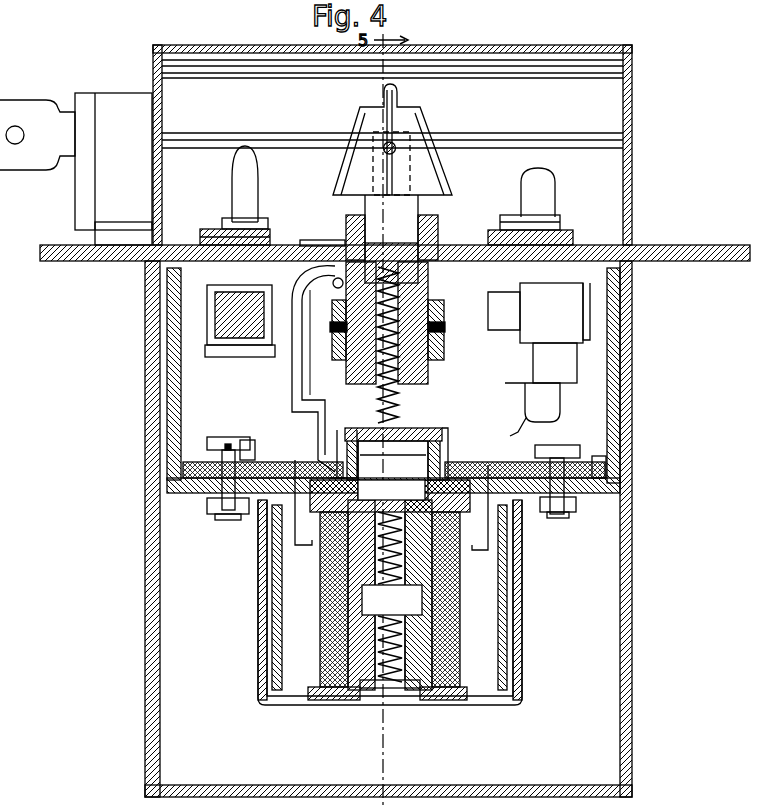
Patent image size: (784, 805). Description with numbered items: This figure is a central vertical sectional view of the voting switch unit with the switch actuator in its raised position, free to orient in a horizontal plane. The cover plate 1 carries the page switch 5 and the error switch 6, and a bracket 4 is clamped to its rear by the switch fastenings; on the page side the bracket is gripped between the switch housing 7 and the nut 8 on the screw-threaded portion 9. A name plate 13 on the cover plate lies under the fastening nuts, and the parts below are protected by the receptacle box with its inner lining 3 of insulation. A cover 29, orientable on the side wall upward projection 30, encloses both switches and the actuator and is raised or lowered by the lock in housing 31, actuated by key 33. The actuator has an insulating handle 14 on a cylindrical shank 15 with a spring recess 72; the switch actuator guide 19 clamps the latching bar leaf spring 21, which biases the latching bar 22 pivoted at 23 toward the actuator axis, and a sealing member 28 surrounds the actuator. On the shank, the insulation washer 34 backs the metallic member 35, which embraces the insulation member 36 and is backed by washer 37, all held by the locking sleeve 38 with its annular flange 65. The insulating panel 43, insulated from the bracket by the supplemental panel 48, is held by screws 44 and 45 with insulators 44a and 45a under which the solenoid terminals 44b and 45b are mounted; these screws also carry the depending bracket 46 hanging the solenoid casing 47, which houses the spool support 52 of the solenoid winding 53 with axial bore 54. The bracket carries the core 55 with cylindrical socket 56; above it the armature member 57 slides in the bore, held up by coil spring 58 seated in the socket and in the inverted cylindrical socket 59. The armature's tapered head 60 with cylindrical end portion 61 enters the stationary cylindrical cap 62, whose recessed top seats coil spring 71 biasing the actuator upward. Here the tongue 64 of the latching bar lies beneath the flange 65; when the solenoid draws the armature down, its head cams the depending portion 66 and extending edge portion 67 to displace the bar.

The cover plate 1 is at (58, 262).
The inner lining 3 is at (160, 638).
The bracket 4 is at (168, 362).
The page switch 5 is at (232, 170).
The error switch 6 is at (556, 196).
The switch housing 7 is at (190, 316).
The nut 8 is at (200, 236).
The screw-threaded portion 9 is at (262, 208).
The name plate 13 is at (600, 246).
The handle 14 is at (426, 150).
The cylindrical shank 15 is at (425, 200).
The switch actuator guide 19 is at (440, 250).
The latching bar leaf spring 21 is at (290, 398).
The latching bar 22 is at (300, 352).
The pivot 23 is at (322, 240).
The sealing member 28 is at (440, 224).
The cover 29 is at (630, 115).
The side wall upward projection 30 is at (535, 140).
The lock housing 31 is at (112, 100).
The key 33 is at (36, 100).
The washer member 34 is at (535, 313).
The metallic member 35 is at (447, 327).
The insulation member 36 is at (565, 311).
The washer 37 is at (541, 389).
The locking sleeve 38 is at (432, 356).
The panel 43 is at (182, 470).
The screw 44 is at (228, 467).
The insulator 44a is at (200, 456).
The solenoid terminal 44b is at (295, 446).
The screw 45 is at (560, 448).
The insulator 45a is at (606, 460).
The solenoid terminal 45b is at (521, 510).
The depending bracket 46 is at (520, 690).
The solenoid casing 47 is at (462, 612).
The supplemental panel 48 is at (165, 488).
The spool support 52 is at (508, 650).
The solenoid winding 53 is at (320, 648).
The axial bore 54 is at (462, 595).
The core 55 is at (405, 700).
The cylindrical socket 56 is at (460, 630).
The armature member 57 is at (390, 597).
The coil spring 58 is at (362, 600).
The inverted cylindrical socket 59 is at (320, 580).
The head 60 is at (462, 440).
The cylindrical end portion 61 is at (436, 434).
The cylindrical cap 62 is at (446, 454).
The tongue 64 is at (378, 424).
The annular flange 65 is at (438, 374).
The depending portion 66 is at (336, 436).
The extending edge portion 67 is at (332, 470).
The coil spring 71 is at (404, 394).
The spring recess 72 is at (356, 350).